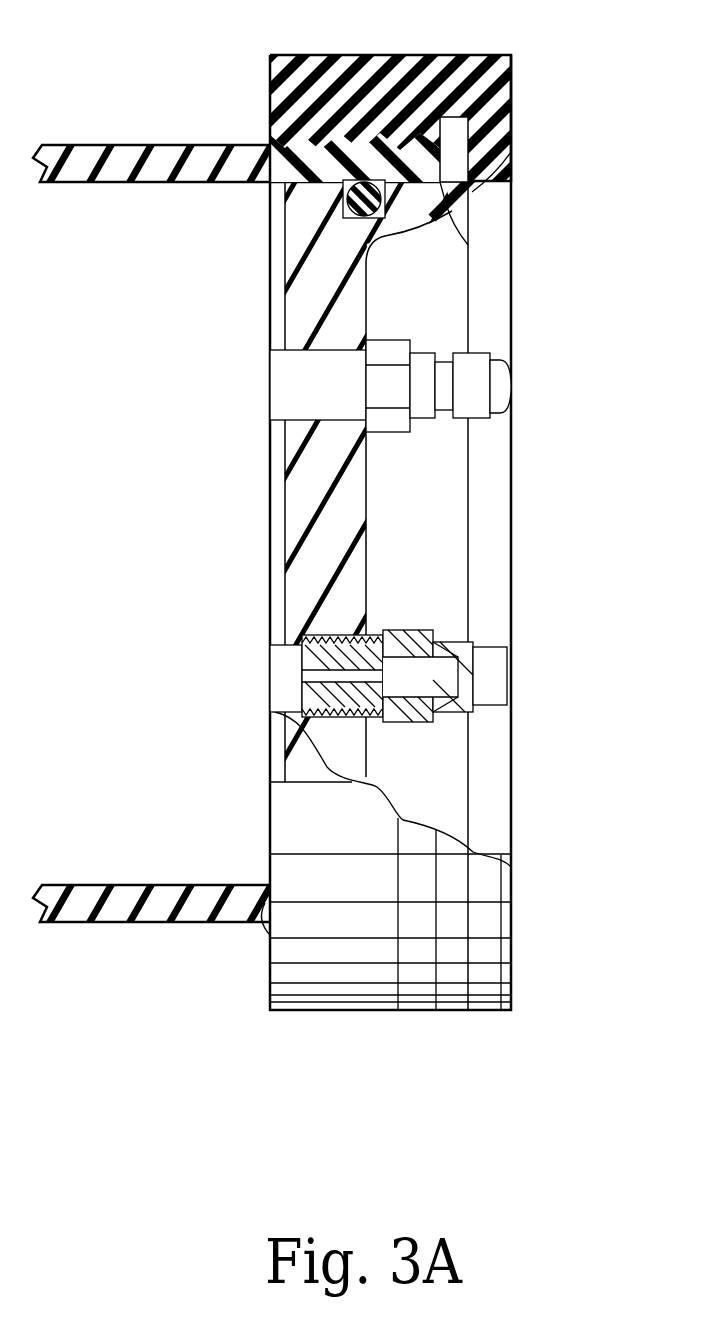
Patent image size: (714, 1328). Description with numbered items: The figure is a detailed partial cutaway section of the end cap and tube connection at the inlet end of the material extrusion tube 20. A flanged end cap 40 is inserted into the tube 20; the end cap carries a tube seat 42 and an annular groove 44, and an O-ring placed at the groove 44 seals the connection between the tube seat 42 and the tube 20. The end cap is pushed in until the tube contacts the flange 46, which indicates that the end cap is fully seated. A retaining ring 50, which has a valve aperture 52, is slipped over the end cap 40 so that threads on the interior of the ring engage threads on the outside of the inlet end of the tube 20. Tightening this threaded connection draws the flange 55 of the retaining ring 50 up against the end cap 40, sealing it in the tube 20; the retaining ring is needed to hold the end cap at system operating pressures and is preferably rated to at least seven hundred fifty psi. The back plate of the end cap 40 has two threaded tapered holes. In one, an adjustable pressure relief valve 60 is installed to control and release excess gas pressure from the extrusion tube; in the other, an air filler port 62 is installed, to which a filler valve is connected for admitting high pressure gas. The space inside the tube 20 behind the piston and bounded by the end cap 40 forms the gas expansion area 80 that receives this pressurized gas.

The material extrusion tube 20 is at (88, 145).
The flanged end cap 40 is at (300, 498).
The tube seat 42 is at (292, 185).
The annular groove 44 is at (347, 220).
The flange 46 is at (450, 216).
The retaining ring 50 is at (511, 96).
The valve aperture 52 is at (498, 562).
The flange 55 is at (490, 180).
The adjustable pressure relief valve 60 is at (507, 678).
The air filler port 62 is at (500, 388).
The gas expansion area 80 is at (147, 661).